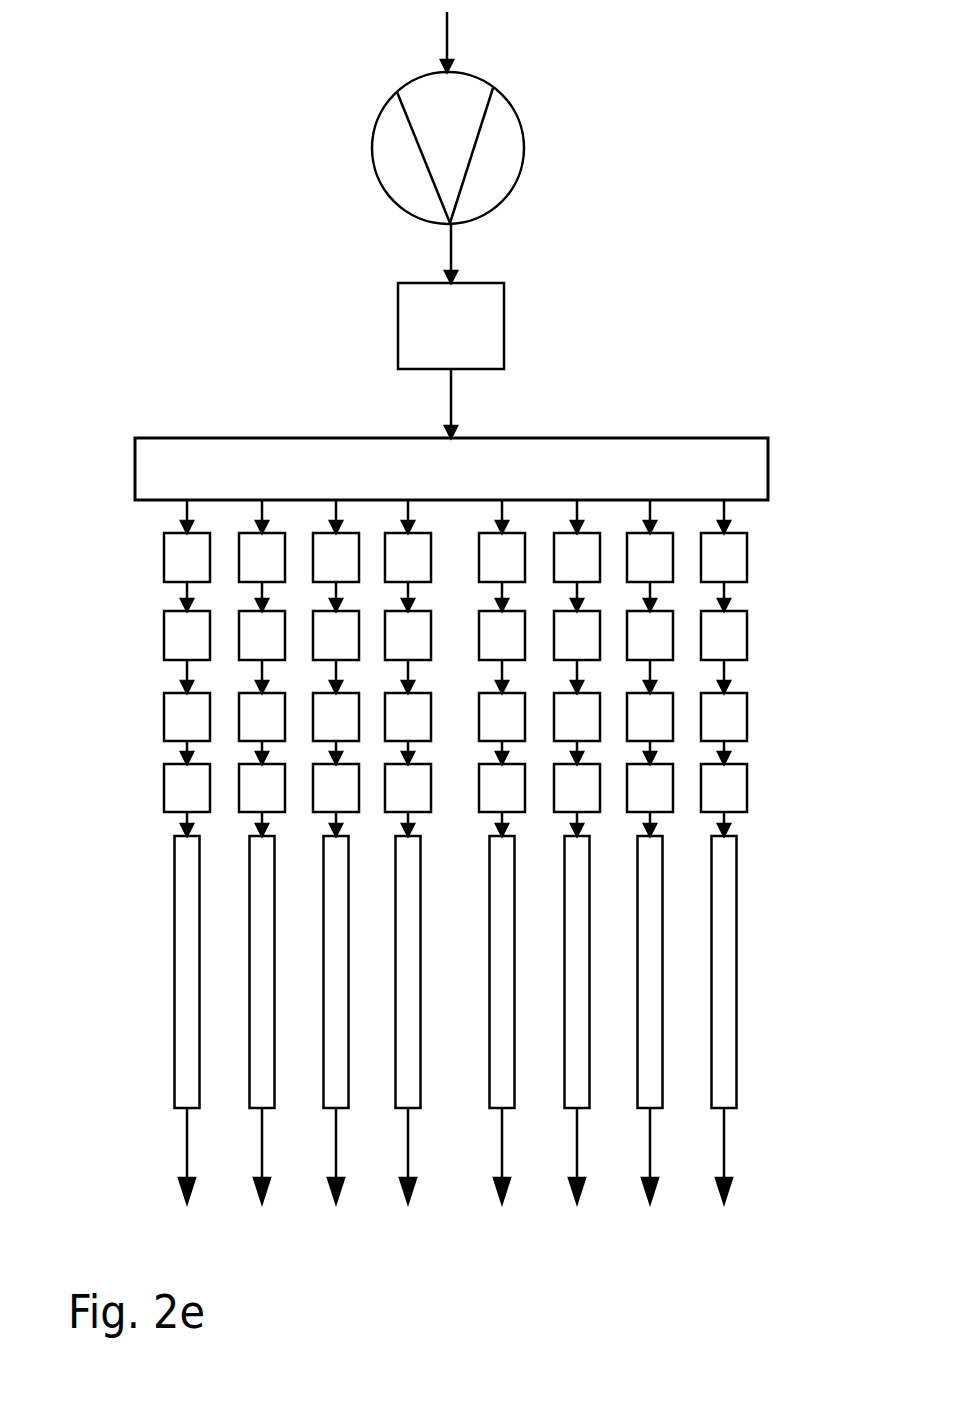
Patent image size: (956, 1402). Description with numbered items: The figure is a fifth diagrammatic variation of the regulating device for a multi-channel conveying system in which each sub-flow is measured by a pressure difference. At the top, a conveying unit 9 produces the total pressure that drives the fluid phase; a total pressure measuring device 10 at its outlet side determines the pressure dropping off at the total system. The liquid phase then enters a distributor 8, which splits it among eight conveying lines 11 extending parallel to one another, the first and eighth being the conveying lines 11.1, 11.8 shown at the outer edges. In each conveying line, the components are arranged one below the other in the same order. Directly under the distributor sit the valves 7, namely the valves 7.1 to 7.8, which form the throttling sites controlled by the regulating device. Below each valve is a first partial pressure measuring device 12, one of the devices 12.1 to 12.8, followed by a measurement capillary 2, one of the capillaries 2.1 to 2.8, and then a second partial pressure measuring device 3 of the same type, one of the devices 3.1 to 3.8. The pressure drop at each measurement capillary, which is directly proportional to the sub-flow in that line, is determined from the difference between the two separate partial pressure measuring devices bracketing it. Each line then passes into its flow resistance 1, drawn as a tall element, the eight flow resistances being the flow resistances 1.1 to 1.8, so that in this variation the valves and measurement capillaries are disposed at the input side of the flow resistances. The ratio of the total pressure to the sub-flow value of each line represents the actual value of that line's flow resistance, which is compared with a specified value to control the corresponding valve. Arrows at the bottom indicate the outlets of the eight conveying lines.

The conveying unit 9 is at (448, 118).
The total pressure measuring device 10 is at (451, 296).
The distributor 8 is at (451, 437).
The valve 7 is at (365, 544).
The valve 7.1 is at (157, 544).
The valve 7.8 is at (765, 541).
The partial pressure measuring device 12 is at (351, 624).
The partial pressure measuring device 12.1 is at (148, 624).
The partial pressure measuring device 12.8 is at (776, 621).
The measurement capillary 2 is at (366, 705).
The measurement capillary 2.1 is at (160, 705).
The measurement capillary 2.8 is at (766, 700).
The partial pressure metering device 3 is at (366, 780).
The partial pressure measuring device 3.1 is at (160, 780).
The partial pressure measuring device 3.8 is at (766, 776).
The flow resistance 1 is at (361, 960).
The flow resistance 1.1 is at (154, 960).
The flow resistance 1.8 is at (772, 960).
The conveying line 11 is at (349, 1155).
The conveying line 11.1 is at (147, 1155).
The conveying line 11.8 is at (785, 1155).